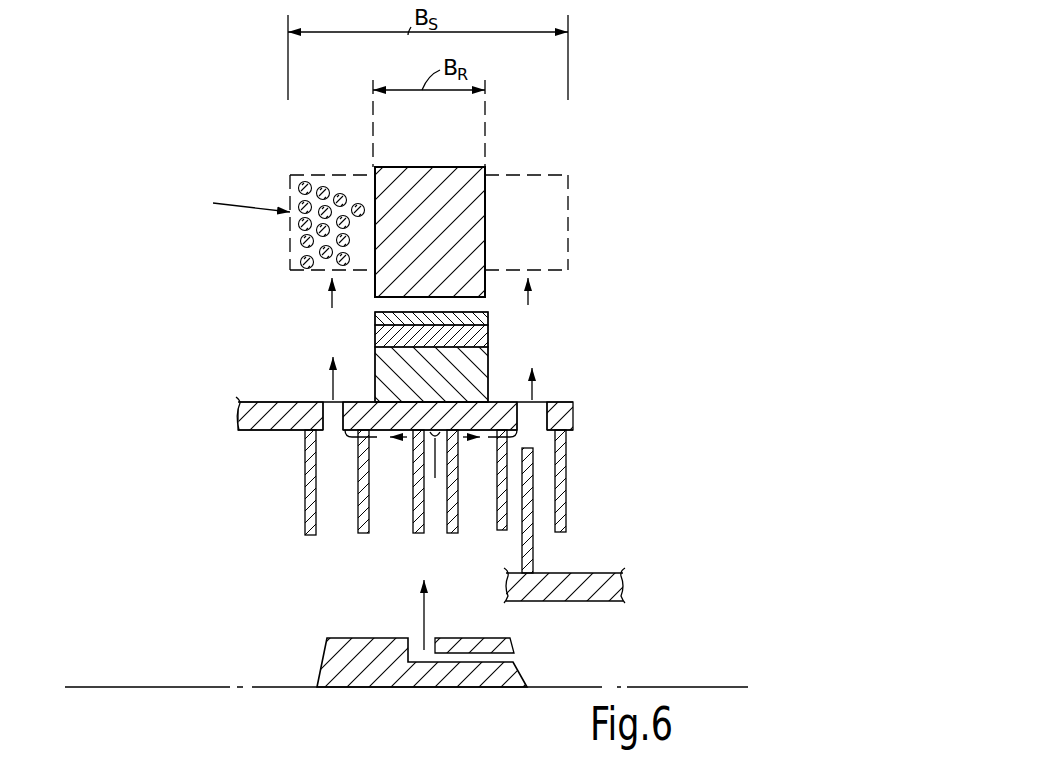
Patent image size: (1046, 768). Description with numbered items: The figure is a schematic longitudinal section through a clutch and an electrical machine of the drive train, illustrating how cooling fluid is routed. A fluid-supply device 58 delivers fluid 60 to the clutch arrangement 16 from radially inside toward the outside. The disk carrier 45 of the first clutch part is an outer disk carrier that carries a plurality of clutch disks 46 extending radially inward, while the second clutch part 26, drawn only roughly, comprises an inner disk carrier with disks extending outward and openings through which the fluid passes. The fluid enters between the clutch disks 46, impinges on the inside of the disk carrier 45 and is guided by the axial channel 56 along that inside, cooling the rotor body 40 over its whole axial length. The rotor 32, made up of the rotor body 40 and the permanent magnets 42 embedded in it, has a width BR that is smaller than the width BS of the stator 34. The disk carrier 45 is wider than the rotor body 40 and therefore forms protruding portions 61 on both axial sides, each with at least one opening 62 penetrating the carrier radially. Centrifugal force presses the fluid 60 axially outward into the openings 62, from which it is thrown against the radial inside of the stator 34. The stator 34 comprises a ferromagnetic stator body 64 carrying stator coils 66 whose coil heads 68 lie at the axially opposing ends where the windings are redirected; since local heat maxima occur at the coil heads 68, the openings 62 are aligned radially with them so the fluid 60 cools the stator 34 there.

The clutch arrangement 16 is at (698, 192).
The second clutch part 26 is at (642, 584).
The rotor 32 is at (630, 328).
The stator 34 is at (523, 172).
The rotor body 40 is at (470, 367).
The permanent magnets 42 is at (484, 333).
The disk carrier 45 is at (268, 403).
The clutch disks 46 is at (563, 485).
The axial channel 56 is at (565, 438).
The fluid-supply device 58 is at (340, 650).
The fluid 60 is at (332, 308).
The protruding portions 61 is at (300, 402).
The opening 62 is at (345, 400).
The stator body 64 is at (440, 234).
The stator coils 66 is at (324, 188).
The coil heads 68 is at (253, 205).